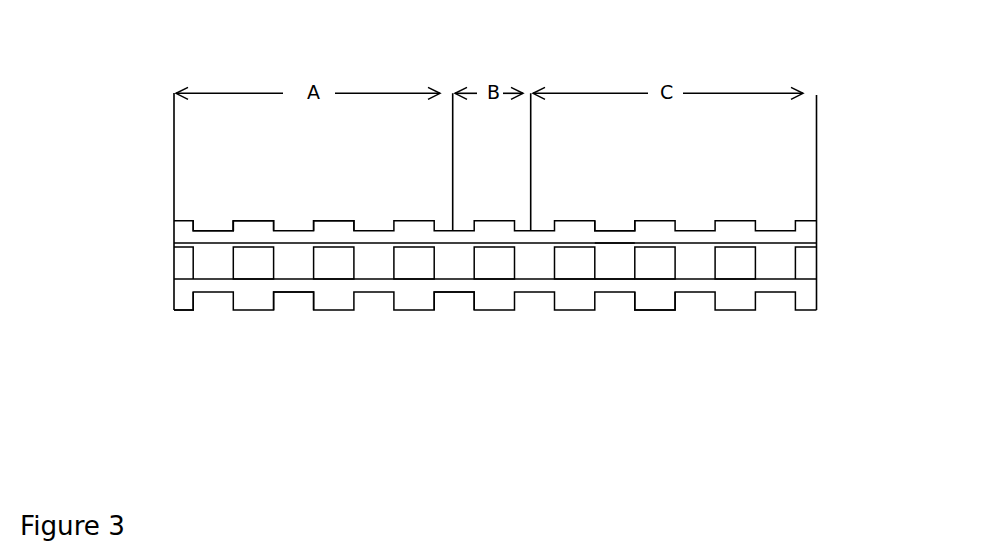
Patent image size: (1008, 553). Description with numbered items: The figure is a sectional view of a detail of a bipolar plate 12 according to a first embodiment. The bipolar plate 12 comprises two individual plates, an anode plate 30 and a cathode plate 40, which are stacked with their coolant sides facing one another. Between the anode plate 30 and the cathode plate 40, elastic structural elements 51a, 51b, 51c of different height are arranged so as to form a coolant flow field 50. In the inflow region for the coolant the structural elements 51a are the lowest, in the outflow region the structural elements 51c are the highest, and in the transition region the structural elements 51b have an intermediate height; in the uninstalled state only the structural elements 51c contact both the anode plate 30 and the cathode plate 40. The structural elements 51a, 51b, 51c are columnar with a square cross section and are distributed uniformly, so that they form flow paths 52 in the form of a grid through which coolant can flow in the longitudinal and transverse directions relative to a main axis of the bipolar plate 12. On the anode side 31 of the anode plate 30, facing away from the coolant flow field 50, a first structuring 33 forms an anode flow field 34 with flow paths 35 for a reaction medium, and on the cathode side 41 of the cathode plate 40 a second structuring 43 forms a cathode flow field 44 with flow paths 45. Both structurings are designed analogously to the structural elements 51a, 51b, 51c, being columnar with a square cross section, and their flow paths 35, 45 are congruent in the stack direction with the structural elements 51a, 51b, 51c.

The bipolar plate 12 is at (830, 133).
The anode plate 30 is at (807, 232).
The anode side 31 is at (365, 231).
The first structuring 33 is at (258, 231).
The anode flow field 34 is at (617, 208).
The flow paths 35 is at (213, 217).
The coolant flow field 50 is at (797, 267).
The structural elements 51a is at (256, 271).
The structural elements 51b is at (497, 270).
The structural elements 51c is at (731, 268).
The flow paths 52 is at (611, 257).
The cathode plate 40 is at (805, 298).
The cathode side 41 is at (658, 310).
The second structuring 43 is at (177, 300).
The cathode flow field 44 is at (453, 310).
The flow paths 45 is at (292, 310).